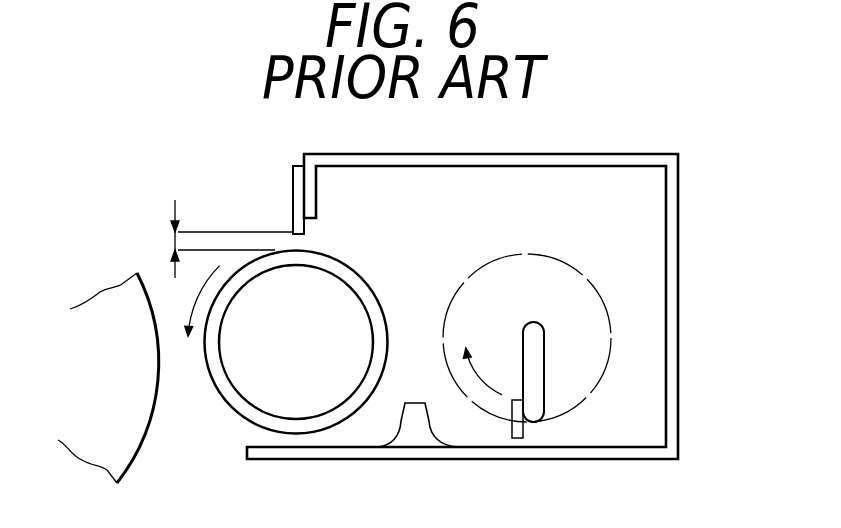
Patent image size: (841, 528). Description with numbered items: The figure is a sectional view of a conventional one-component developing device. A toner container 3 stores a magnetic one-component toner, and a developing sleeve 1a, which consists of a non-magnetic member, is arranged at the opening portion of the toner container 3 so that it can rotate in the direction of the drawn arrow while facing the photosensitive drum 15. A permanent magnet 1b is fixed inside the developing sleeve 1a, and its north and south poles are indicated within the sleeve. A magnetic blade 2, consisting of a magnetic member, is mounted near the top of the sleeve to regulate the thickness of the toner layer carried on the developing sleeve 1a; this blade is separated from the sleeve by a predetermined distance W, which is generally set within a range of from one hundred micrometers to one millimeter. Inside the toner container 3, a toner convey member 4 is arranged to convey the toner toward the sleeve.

The developing sleeve 1a is at (212, 378).
The permanent magnet 1b is at (233, 393).
The magnetic blade 2 is at (292, 180).
The toner container 3 is at (678, 207).
The toner convey member 4 is at (537, 350).
The photosensitive drum 15 is at (137, 462).
The predetermined distance W is at (217, 239).